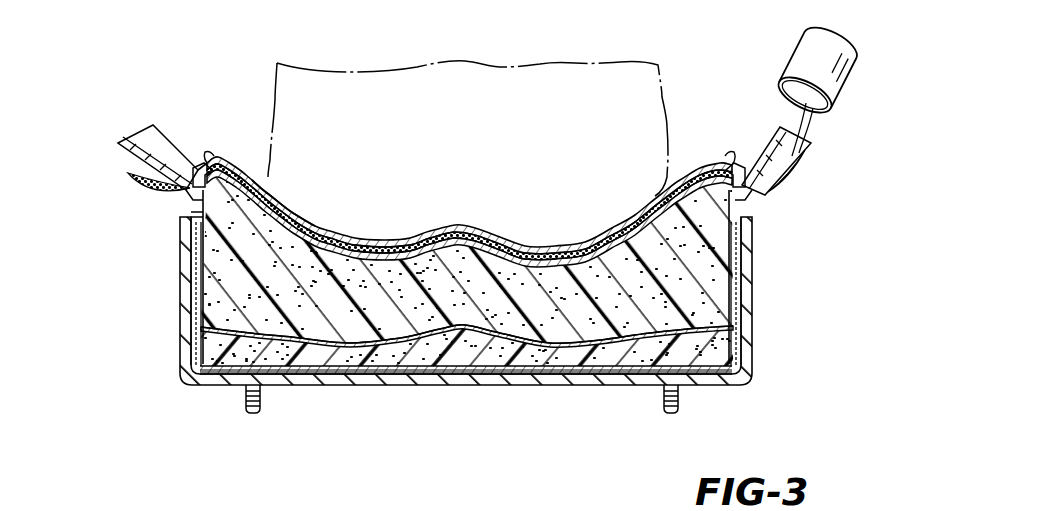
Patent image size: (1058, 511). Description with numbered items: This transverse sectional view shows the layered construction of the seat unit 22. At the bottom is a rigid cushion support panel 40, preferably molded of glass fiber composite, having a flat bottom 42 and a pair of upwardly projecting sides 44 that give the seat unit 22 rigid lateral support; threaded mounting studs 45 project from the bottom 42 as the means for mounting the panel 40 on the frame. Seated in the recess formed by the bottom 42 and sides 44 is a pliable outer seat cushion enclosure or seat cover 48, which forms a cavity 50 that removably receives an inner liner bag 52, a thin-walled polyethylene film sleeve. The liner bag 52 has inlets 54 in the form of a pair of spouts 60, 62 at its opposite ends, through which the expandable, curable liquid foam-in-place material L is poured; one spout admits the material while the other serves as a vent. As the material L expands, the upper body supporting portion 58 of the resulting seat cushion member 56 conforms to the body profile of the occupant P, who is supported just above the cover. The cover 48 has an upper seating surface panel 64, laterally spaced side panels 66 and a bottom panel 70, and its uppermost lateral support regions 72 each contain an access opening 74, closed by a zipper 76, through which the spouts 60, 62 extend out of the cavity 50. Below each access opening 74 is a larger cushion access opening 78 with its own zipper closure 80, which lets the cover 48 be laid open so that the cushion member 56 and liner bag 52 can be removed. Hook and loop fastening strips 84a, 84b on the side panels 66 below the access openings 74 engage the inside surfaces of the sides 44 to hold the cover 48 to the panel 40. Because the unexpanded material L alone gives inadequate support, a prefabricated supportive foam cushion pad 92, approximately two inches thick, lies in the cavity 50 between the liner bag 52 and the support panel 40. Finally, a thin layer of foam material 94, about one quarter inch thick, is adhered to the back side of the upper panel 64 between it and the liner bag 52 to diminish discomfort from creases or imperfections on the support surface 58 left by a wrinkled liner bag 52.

The seat unit 22 is at (247, 130).
The cushion support panel 40 is at (752, 370).
The flat bottom 42 is at (532, 387).
The upwardly projecting sides 44 is at (175, 363).
The threaded mounting studs 45 is at (245, 400).
The outer seat cushion enclosure 48 is at (205, 160).
The cavity 50 is at (182, 233).
The inner liner bag 52 is at (330, 365).
The inlets 54 is at (122, 143).
The seat cushion member 56 is at (745, 313).
The upper body supporting portion 58 is at (537, 243).
The spout 60 is at (800, 160).
The spout 62 is at (130, 168).
The upper seating surface panel 64 is at (287, 213).
The side panels 66 is at (185, 325).
The bottom panel 70 is at (430, 380).
The lateral support regions 72 is at (237, 160).
The access opening 74 is at (182, 207).
The zipper 76 is at (183, 213).
The cushion access opening 78 is at (182, 363).
The zipper closure 80 is at (182, 333).
The hook and loop fastening strip 84a is at (182, 281).
The hook and loop fastening strip 84b is at (182, 268).
The foam cushion pad 92 is at (622, 363).
The foam material layer 94 is at (428, 238).
The occupant P is at (664, 97).
The liquid foam-in-place material L is at (838, 120).